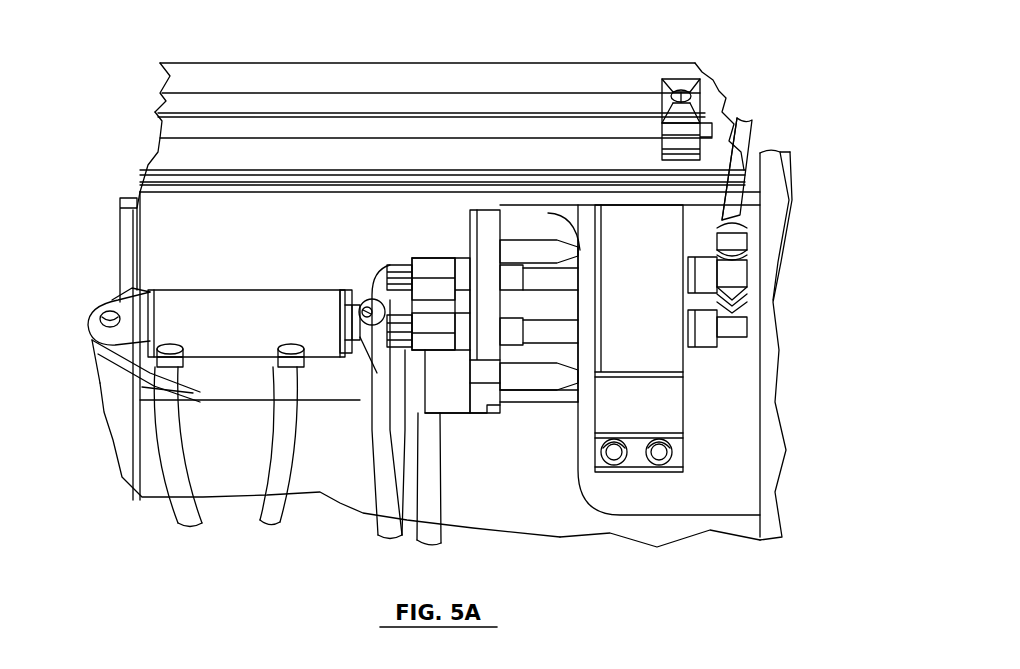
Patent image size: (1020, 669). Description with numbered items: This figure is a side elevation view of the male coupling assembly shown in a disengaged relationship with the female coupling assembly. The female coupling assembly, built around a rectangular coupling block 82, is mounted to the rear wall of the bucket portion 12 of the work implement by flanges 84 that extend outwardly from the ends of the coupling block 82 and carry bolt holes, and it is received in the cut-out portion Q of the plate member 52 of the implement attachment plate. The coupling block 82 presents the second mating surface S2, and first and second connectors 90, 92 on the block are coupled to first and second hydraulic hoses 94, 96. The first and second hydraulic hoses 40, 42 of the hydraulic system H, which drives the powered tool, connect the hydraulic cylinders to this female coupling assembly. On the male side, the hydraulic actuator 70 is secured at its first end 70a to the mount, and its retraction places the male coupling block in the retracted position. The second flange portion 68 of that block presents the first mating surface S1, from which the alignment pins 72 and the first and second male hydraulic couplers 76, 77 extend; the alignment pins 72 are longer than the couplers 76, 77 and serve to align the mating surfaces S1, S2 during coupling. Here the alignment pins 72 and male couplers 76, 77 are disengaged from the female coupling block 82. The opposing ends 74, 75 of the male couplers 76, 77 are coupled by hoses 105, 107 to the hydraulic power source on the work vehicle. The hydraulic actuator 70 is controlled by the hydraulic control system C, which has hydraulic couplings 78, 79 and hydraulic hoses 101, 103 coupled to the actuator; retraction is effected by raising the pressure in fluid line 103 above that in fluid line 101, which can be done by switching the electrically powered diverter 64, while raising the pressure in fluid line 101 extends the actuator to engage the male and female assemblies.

The hydraulic system H is at (200, 152).
The first hydraulic hose 40 is at (312, 104).
The second hydraulic hose 42 is at (398, 133).
The first mating surface S1 is at (505, 215).
The second mating surface S2 is at (587, 424).
The cut-out portion Q is at (717, 494).
The hydraulic control system C is at (227, 524).
The bucket portion 12 is at (768, 393).
The plate member 52 is at (327, 487).
The diverter 64 is at (262, 402).
The second flange portion 68 is at (478, 238).
The hydraulic actuator 70 is at (262, 306).
The first end 70a is at (106, 313).
The alignment pins 72 is at (512, 248).
The opposing end 74 is at (441, 395).
The opposing end 75 is at (420, 265).
The first male hydraulic coupler 76 is at (513, 283).
The second male hydraulic coupler 77 is at (562, 338).
The hydraulic coupling 78 is at (186, 354).
The hydraulic coupling 79 is at (300, 354).
The coupling block 82 is at (660, 360).
The flanges 84 is at (637, 462).
The first connector 90 is at (738, 273).
The second connector 92 is at (736, 328).
The first hydraulic hose 94 is at (733, 198).
The second hydraulic hose 96 is at (768, 220).
The fluid line 101 is at (175, 452).
The fluid line 103 is at (293, 437).
The hose 105 is at (432, 492).
The hose 107 is at (385, 490).